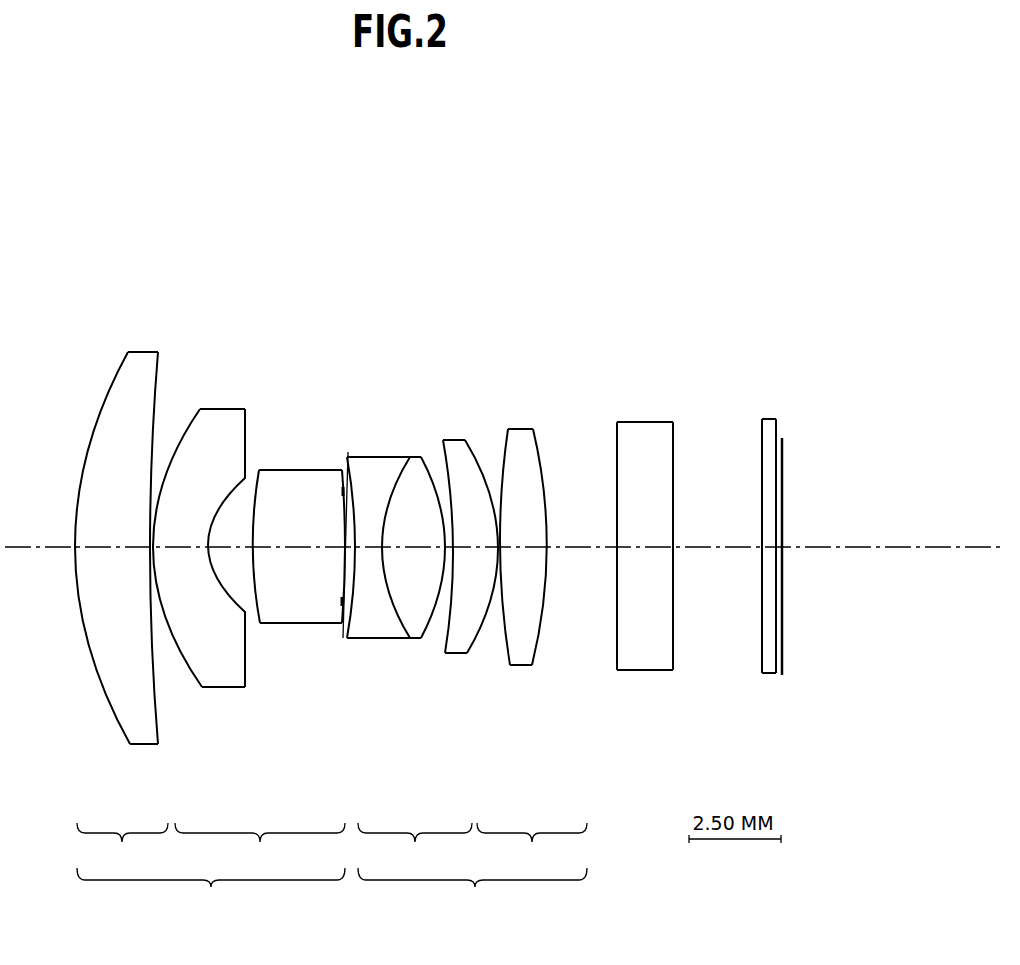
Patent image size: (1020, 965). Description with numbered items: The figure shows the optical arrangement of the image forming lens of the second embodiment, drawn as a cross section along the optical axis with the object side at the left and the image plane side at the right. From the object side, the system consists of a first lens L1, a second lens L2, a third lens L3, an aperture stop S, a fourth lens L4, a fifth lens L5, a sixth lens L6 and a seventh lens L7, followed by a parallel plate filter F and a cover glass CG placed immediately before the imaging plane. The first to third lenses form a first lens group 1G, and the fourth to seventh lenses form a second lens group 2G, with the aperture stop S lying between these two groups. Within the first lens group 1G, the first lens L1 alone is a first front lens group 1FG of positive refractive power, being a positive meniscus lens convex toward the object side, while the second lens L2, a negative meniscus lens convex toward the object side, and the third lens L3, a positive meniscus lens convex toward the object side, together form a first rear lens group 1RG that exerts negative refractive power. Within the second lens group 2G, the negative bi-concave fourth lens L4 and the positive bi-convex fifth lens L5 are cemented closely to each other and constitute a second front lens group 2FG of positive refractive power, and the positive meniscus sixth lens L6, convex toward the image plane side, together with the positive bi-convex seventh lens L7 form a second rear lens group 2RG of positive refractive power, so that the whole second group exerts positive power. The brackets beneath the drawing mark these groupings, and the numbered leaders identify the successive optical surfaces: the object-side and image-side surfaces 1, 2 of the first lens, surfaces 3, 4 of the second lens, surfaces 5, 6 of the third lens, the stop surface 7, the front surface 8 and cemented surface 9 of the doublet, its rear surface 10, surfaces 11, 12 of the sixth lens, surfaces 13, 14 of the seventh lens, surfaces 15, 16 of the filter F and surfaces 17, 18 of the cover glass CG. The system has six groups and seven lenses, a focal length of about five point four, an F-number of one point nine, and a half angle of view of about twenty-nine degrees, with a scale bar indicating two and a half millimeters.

The first lens L1 is at (143, 370).
The second lens L2 is at (220, 427).
The third lens L3 is at (302, 500).
The fourth lens L4 is at (380, 480).
The fifth lens L5 is at (413, 482).
The sixth lens L6 is at (462, 443).
The seventh lens L7 is at (522, 435).
The aperture stop S is at (353, 488).
The filter F is at (650, 443).
The cover glass CG is at (772, 433).
The object-side surface of first lens 1 is at (113, 713).
The image-side surface of first lens 2 is at (160, 727).
The object-side surface of second lens 3 is at (185, 670).
The image-side surface of second lens 4 is at (233, 590).
The object-side surface of third lens 5 is at (255, 627).
The image-side surface of third lens 6 is at (337, 588).
The aperture stop surface 7 is at (350, 617).
The object-side surface of fourth lens 8 is at (353, 590).
The cemented surface of fourth and fifth lenses 9 is at (393, 630).
The image-side surface of fifth lens 10 is at (426, 635).
The object-side surface of sixth lens 11 is at (442, 620).
The image-side surface of sixth lens 12 is at (482, 633).
The object-side surface of seventh lens 13 is at (502, 660).
The image-side surface of seventh lens 14 is at (538, 648).
The object-side surface of filter 15 is at (619, 649).
The image-side surface of filter 16 is at (676, 649).
The object-side surface of cover glass 17 is at (763, 660).
The image-side surface of cover glass 18 is at (779, 655).
The first front lens group 1FG is at (122, 845).
The first rear lens group 1RG is at (260, 845).
The second front lens group 2FG is at (415, 845).
The second rear lens group 2RG is at (532, 845).
The first lens group 1G is at (211, 891).
The second lens group 2G is at (472, 891).